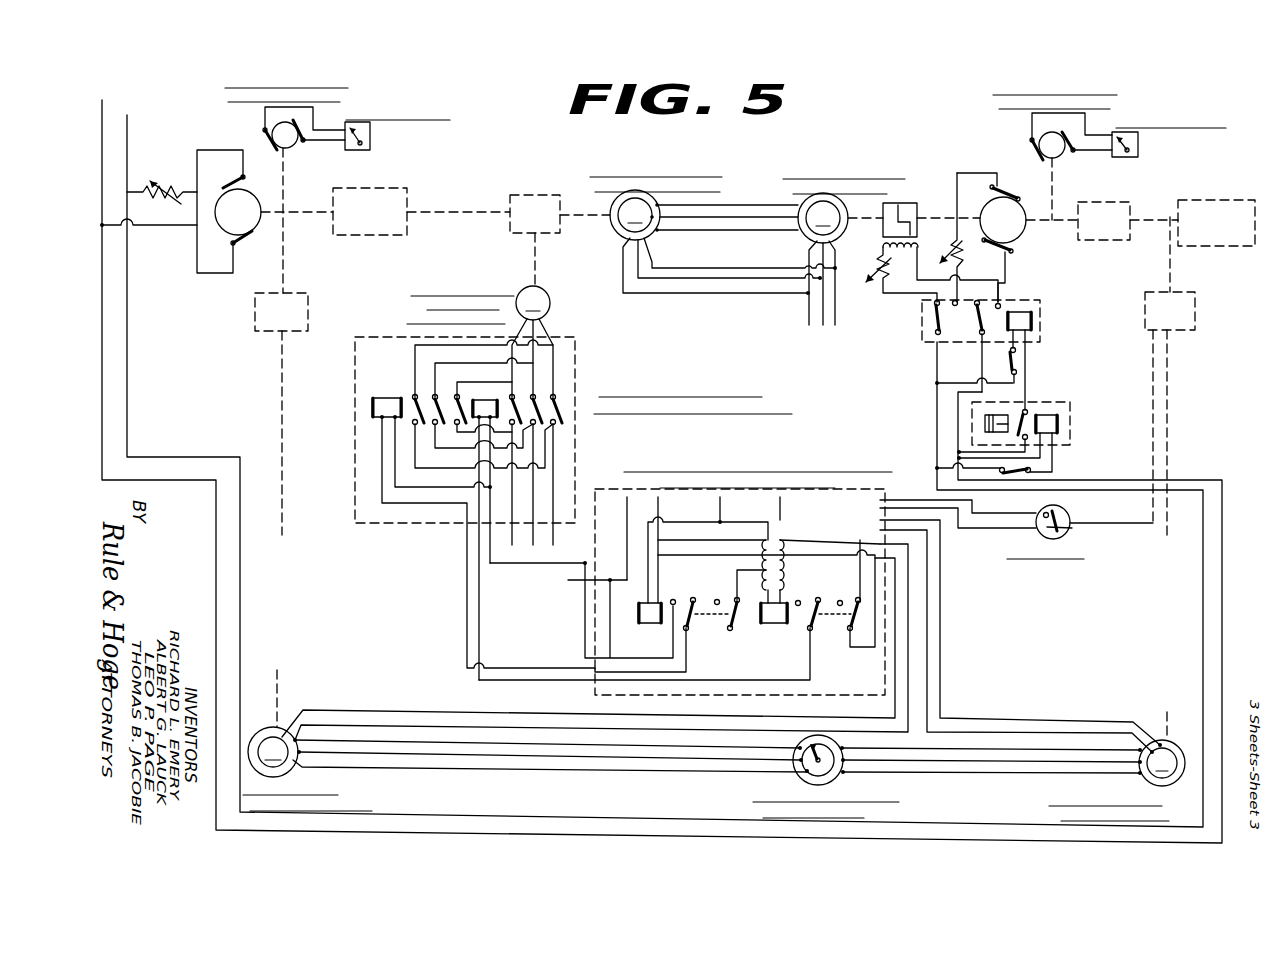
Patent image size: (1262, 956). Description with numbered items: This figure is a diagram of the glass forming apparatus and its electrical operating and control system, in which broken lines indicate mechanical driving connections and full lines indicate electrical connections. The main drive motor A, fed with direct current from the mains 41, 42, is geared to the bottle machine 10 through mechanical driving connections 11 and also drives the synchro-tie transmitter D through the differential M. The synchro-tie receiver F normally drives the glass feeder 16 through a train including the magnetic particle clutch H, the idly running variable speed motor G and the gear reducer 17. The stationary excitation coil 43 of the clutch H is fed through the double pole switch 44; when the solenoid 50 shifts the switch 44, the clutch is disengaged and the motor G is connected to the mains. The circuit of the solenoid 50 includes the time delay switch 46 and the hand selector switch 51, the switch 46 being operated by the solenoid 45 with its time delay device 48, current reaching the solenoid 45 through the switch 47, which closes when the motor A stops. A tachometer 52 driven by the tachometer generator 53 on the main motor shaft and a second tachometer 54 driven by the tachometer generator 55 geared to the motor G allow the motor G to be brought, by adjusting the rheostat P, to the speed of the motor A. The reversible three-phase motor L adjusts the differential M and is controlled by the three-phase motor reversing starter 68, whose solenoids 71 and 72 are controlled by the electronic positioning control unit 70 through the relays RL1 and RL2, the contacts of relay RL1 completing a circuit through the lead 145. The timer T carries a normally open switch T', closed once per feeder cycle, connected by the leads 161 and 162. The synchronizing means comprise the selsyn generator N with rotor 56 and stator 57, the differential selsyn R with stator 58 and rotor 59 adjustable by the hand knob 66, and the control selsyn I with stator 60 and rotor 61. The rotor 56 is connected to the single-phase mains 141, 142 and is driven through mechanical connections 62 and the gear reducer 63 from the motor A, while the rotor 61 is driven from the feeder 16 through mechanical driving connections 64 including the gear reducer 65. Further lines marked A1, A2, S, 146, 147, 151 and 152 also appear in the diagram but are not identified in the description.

The supply line A1 is at (102, 104).
The supply line A2 is at (127, 118).
The main drive motor A is at (250, 190).
The mechanical driving connections 11 is at (300, 209).
The bottle machine 10 is at (395, 189).
The differential M is at (535, 193).
The tachometer generator 53 is at (272, 128).
The tachometer 52 is at (370, 135).
The synchro-tie transmitter D is at (713, 229).
The synchro-tie receiver F is at (844, 245).
The magnetic particle clutch H is at (918, 183).
The stationary excitation coil 43 is at (883, 250).
The rheostat P is at (940, 245).
The variable speed motor G is at (1015, 228).
The tachometer generator 55 is at (1040, 138).
The second tachometer 54 is at (1138, 143).
The gear reducer 17 is at (1112, 200).
The glass feeder 16 is at (1244, 184).
The gear reducer 65 is at (1197, 298).
The mechanical driving connections 64 is at (1162, 543).
The gear reducer 63 is at (255, 300).
The mechanical connections 62 is at (281, 400).
The motor L is at (480, 339).
The three-phase motor reversing starter 68 is at (580, 356).
The solenoid of the starter 72 is at (372, 400).
The solenoid of the starter 71 is at (473, 402).
The lead 145 is at (380, 447).
The control wire 146 is at (520, 690).
The control wire 147 is at (750, 684).
The electronic positioning control unit 70 is at (848, 522).
The relay RL1 is at (696, 582).
The relay RL2 is at (809, 618).
The transformer S is at (760, 515).
The main 141 is at (720, 516).
The main 142 is at (432, 725).
The double pole switch 44 is at (935, 322).
The solenoid 50 is at (1032, 318).
The hand selector switch 51 is at (1020, 360).
The switch 46 is at (1030, 420).
The time delay dash pot 48 is at (997, 415).
The solenoid 45 is at (1060, 427).
The switch 47 is at (1030, 473).
The main 42 is at (935, 403).
The main 41 is at (955, 432).
The timer T is at (1080, 528).
The timer switch T' is at (1089, 538).
The lead 161 is at (987, 517).
The lead 162 is at (1013, 528).
The selsyn generator N is at (521, 769).
The rotor 56 is at (265, 732).
The stator 57 is at (300, 769).
The differential selsyn R is at (838, 778).
The rotor 59 is at (812, 745).
The stator 58 is at (840, 750).
The hand knob 66 is at (816, 761).
The control selsyn I is at (1117, 781).
The rotor 61 is at (1170, 742).
The stator 60 is at (1175, 783).
The wire 151 is at (1047, 720).
The wire 152 is at (1115, 700).